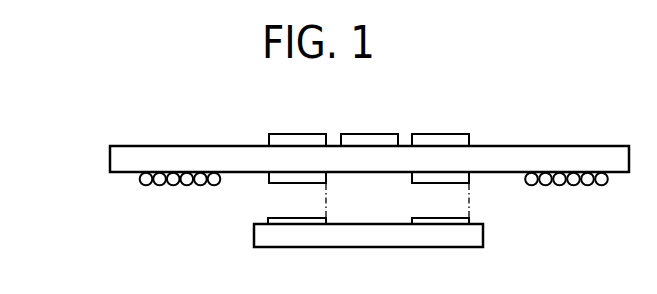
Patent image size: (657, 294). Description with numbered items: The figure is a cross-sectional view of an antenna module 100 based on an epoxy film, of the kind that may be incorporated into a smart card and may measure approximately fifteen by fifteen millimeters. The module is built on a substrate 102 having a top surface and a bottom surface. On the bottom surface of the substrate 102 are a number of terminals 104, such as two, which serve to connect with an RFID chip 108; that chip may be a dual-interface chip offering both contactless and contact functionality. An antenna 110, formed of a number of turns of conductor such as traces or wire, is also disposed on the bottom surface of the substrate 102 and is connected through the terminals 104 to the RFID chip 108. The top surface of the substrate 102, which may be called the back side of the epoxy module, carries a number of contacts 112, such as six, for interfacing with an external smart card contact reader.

The antenna module 100 is at (98, 62).
The substrate 102 is at (140, 146).
The terminals 104 is at (293, 184).
The RFID chip 108 is at (322, 247).
The antenna 110 is at (141, 190).
The contacts 112 is at (289, 134).